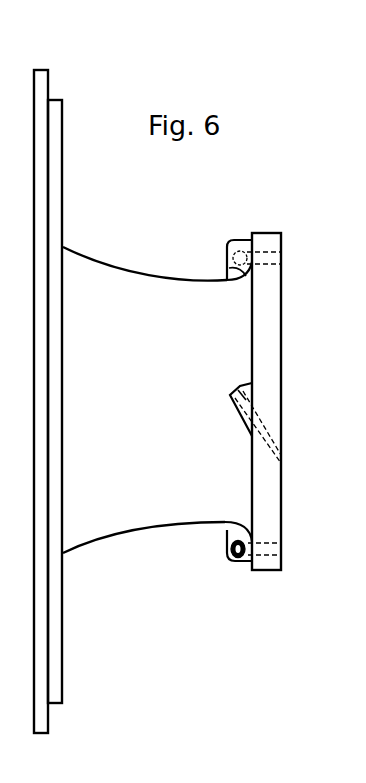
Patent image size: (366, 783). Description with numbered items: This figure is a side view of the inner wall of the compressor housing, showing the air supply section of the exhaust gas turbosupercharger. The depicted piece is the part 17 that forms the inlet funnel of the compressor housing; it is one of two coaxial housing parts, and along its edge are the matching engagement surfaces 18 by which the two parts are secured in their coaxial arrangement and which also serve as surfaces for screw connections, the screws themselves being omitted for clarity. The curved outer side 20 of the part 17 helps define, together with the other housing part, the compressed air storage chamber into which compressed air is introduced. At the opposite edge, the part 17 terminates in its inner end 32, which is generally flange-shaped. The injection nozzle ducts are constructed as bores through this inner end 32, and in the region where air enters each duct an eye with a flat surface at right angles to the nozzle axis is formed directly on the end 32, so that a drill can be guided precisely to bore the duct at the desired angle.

The part forming the inlet funnel of the compressor housing 17 is at (41, 68).
The matching engagement surfaces 18 is at (50, 82).
The outer side of the part 20 is at (141, 268).
The inner end 32 is at (271, 353).